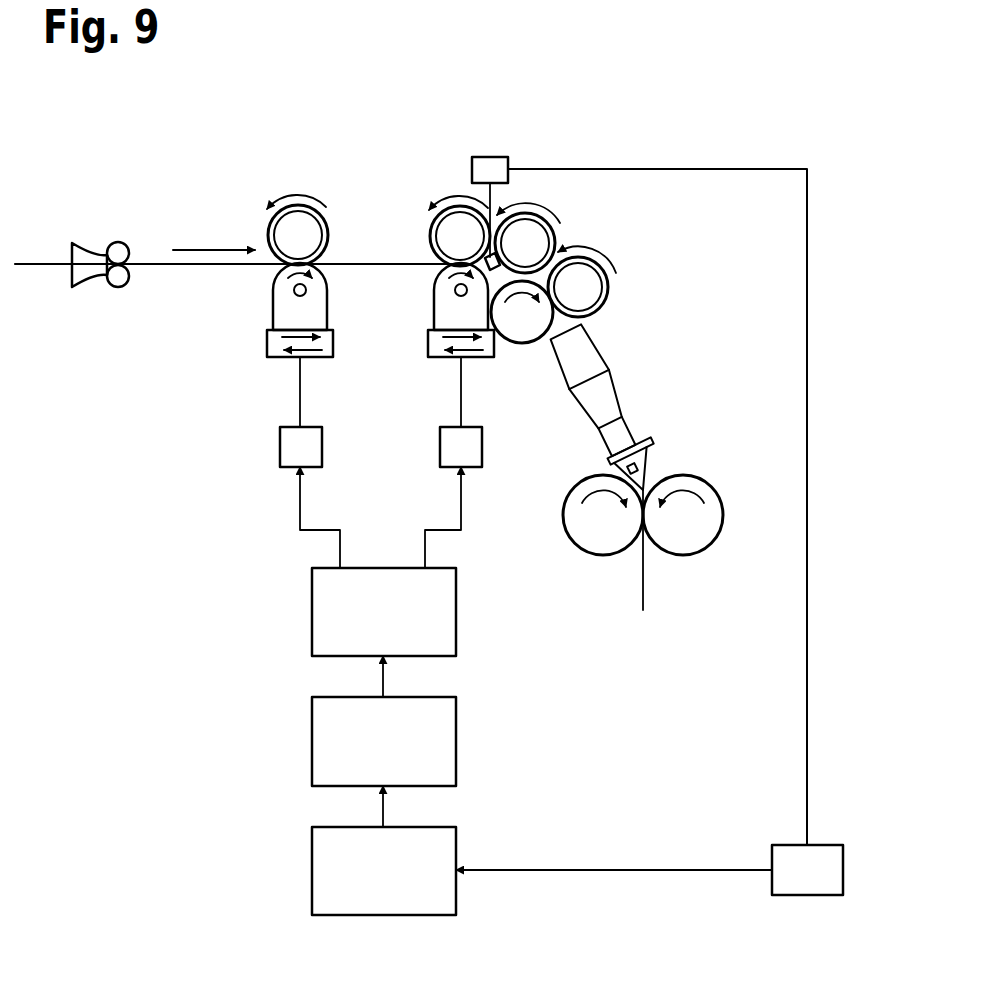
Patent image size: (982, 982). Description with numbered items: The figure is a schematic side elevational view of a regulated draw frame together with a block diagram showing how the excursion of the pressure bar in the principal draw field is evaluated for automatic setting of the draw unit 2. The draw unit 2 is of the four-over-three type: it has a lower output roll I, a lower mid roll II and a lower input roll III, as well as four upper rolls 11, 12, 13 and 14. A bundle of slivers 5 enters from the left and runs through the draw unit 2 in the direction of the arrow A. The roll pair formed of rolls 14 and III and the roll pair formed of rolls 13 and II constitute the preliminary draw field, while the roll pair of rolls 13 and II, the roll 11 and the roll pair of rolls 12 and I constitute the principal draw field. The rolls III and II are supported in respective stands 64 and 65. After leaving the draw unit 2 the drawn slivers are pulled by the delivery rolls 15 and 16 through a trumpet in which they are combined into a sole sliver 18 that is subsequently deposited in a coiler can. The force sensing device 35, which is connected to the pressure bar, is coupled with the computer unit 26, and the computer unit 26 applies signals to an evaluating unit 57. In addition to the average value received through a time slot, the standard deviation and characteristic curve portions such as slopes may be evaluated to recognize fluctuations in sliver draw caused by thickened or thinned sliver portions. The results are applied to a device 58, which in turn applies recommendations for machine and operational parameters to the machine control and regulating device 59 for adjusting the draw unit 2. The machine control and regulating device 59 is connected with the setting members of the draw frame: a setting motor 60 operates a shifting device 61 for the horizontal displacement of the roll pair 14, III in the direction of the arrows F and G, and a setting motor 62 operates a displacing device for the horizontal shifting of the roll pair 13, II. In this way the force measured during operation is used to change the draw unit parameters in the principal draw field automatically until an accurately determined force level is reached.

The draw unit 2 is at (685, 222).
The slivers 5 is at (356, 264).
The upper roll 11 is at (583, 290).
The upper roll 12 is at (535, 247).
The upper roll 13 is at (446, 229).
The upper roll 14 is at (297, 236).
The delivery roll 15 is at (610, 530).
The delivery roll 16 is at (697, 514).
The sole sliver 18 is at (647, 565).
The computer unit 26 is at (808, 870).
The force sensing device 35 is at (490, 165).
The evaluating unit 57 is at (366, 877).
The device 58 is at (365, 746).
The machine control and regulating device 59 is at (432, 604).
The setting motor 60 is at (298, 445).
The shifting device 61 is at (270, 347).
The setting motor 62 is at (466, 448).
The stand 64 is at (287, 308).
The stand 65 is at (442, 317).
The arrow A is at (182, 247).
The arrow F is at (292, 320).
The arrow G is at (320, 357).
The lower output roll I is at (530, 318).
The lower mid roll II is at (437, 283).
The lower input roll III is at (277, 275).